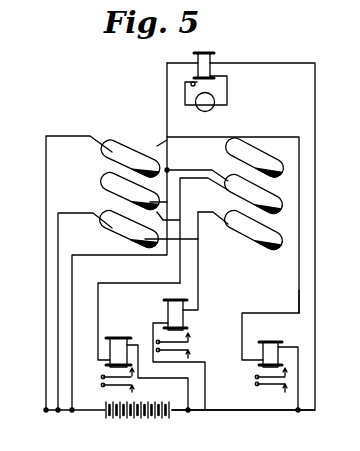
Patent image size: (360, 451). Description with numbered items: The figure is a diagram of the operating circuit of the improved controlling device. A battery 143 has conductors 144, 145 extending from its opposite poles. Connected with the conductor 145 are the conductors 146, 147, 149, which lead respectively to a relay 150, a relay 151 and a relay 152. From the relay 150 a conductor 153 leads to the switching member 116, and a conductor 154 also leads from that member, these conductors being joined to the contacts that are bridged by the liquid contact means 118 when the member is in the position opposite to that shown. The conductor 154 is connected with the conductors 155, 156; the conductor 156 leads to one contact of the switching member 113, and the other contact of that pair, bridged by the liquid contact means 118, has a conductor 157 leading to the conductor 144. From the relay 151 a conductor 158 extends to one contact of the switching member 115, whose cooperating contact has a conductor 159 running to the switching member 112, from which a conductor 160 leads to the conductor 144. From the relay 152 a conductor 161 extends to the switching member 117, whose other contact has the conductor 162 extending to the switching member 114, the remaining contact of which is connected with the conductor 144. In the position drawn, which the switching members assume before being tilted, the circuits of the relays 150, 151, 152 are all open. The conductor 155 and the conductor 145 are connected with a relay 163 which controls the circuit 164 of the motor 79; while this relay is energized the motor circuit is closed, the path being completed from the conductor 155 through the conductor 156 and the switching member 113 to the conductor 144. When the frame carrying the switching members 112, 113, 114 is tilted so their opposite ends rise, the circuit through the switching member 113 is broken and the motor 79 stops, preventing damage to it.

The motor 79 is at (212, 108).
The switching member 112 is at (109, 234).
The switching member 113 is at (113, 183).
The switching member 114 is at (122, 145).
The switching member 115 is at (281, 237).
The switching member 116 is at (281, 192).
The switching member 117 is at (257, 153).
The liquid contact means 118 is at (151, 163).
The battery 143 is at (143, 418).
The conductor 144 is at (44, 258).
The conductor 145 is at (235, 412).
The conductor 146 is at (166, 371).
The conductor 147 is at (205, 375).
The conductor 149 is at (298, 392).
The relay 150 is at (143, 325).
The relay 151 is at (187, 302).
The relay 152 is at (268, 345).
The conductor 153 is at (98, 283).
The conductor 154 is at (184, 158).
The conductor 155 is at (169, 153).
The conductor 156 is at (181, 192).
The conductor 157 is at (198, 239).
The conductor 158 is at (198, 272).
The conductor 159 is at (207, 209).
The conductor 160 is at (58, 318).
The conductor 161 is at (299, 290).
The conductor 162 is at (257, 137).
The relay 163 is at (196, 63).
The motor circuit 164 is at (227, 87).